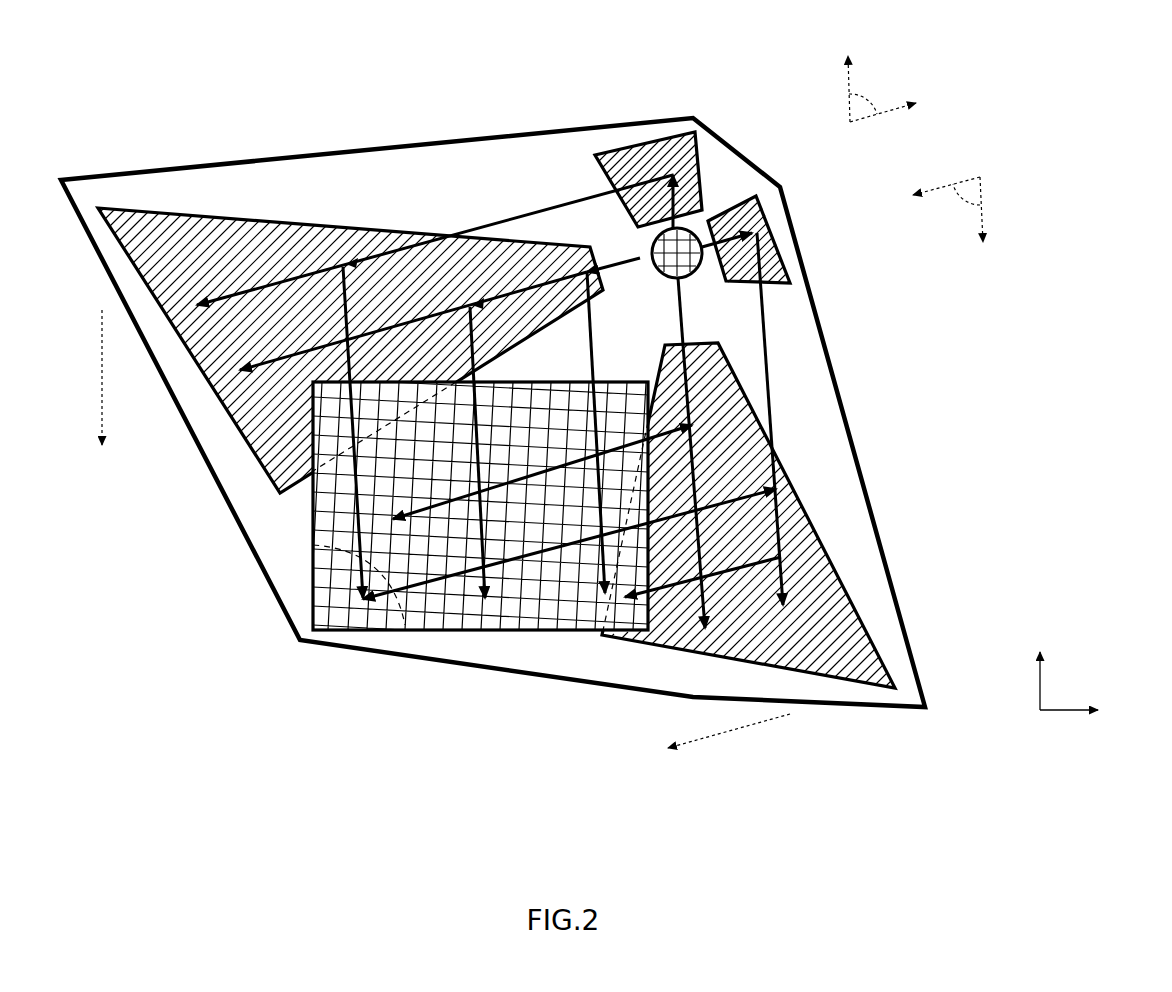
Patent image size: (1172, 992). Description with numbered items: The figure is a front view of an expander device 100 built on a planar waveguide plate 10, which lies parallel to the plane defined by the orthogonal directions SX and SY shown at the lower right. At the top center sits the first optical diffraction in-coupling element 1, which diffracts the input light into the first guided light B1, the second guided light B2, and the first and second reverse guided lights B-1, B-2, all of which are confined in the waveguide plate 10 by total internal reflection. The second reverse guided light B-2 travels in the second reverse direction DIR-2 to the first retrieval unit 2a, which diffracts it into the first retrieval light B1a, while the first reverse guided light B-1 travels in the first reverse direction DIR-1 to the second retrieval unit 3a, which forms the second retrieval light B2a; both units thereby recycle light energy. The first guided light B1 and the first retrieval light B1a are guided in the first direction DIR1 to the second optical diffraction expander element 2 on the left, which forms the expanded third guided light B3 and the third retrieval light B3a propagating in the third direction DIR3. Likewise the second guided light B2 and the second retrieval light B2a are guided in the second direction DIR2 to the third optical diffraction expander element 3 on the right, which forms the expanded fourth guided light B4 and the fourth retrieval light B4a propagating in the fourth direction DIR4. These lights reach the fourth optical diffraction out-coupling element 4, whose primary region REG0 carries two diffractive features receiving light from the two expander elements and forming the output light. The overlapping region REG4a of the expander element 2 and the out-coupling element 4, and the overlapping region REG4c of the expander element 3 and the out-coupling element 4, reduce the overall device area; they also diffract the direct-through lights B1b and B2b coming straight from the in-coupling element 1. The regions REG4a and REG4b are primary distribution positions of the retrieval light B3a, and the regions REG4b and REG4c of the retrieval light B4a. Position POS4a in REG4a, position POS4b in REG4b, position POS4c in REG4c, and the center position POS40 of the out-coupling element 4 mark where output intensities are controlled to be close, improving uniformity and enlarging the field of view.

The expander device 100 is at (493, 361).
The planar waveguide plate 10 is at (423, 143).
The first optical diffraction in-coupling element 1 is at (703, 228).
The second optical diffraction expander element 2 is at (350, 307).
The first retrieval unit 2a is at (640, 147).
The third optical diffraction expander element 3 is at (751, 530).
The second retrieval unit 3a is at (780, 240).
The fourth optical diffraction out-coupling element 4 is at (417, 581).
The primary region of the out-coupling element REG0 is at (265, 524).
The overlapping region of the second expander element and the out-coupling element REG4a is at (258, 460).
The region REG4b is at (312, 604).
The overlapping region of the third expander element and the out-coupling element REG4c is at (604, 637).
The first reverse guided light B-1 is at (728, 194).
The second reverse guided light B-2 is at (714, 178).
The first guided light B1 is at (624, 256).
The first retrieval light B1a is at (512, 207).
The first direct-through light B1b is at (640, 283).
The second guided light B2 is at (685, 321).
The second retrieval light B2a is at (768, 348).
The direct-through light B2b is at (672, 325).
The expanded third guided light B3 is at (485, 378).
The third retrieval light B3a is at (315, 543).
The expanded fourth guided light B4 is at (569, 512).
The fourth retrieval light B4a is at (703, 586).
The position POS4a is at (366, 452).
The center position of the out-coupling element POS40 is at (489, 440).
The position POS4b is at (357, 631).
The position POS4c is at (620, 632).
The first reverse direction DIR-1 is at (909, 98).
The second reverse direction DIR-2 is at (866, 78).
The first direction DIR1 is at (946, 197).
The second direction DIR2 is at (1009, 211).
The third direction DIR3 is at (80, 377).
The fourth direction DIR4 is at (729, 736).
The direction SX is at (1086, 699).
The direction SY is at (1038, 664).